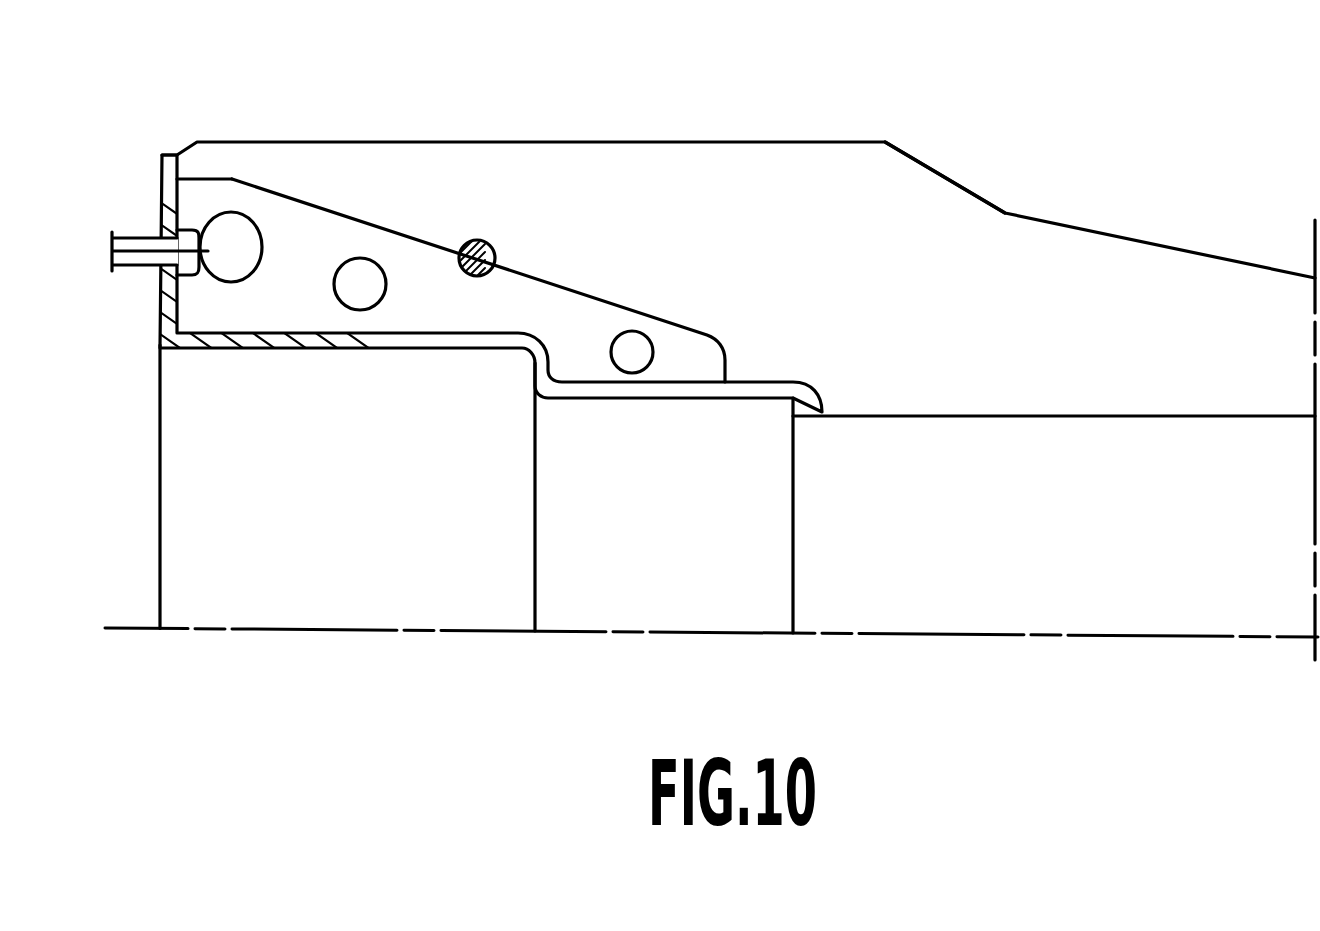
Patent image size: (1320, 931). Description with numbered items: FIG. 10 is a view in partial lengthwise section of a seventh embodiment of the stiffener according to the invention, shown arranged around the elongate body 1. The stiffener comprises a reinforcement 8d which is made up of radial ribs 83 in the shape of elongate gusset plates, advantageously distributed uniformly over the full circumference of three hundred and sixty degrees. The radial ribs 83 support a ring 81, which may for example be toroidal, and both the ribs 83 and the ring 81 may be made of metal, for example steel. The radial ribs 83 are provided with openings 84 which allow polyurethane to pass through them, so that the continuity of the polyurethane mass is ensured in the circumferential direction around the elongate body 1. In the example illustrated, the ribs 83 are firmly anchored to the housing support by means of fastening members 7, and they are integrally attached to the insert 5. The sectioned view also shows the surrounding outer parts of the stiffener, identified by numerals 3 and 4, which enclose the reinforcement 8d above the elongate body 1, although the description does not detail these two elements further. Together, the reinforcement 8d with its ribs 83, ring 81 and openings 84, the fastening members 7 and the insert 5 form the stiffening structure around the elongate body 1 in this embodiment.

The elongate body 1 is at (1165, 416).
The housing 3 is at (739, 92).
The top wall 4 is at (862, 120).
The insert 5 is at (797, 382).
The fastening members 7 is at (141, 237).
The reinforcement 8d is at (643, 285).
The ring 81 is at (492, 240).
The radial ribs 83 is at (358, 258).
The openings 84 is at (253, 213).